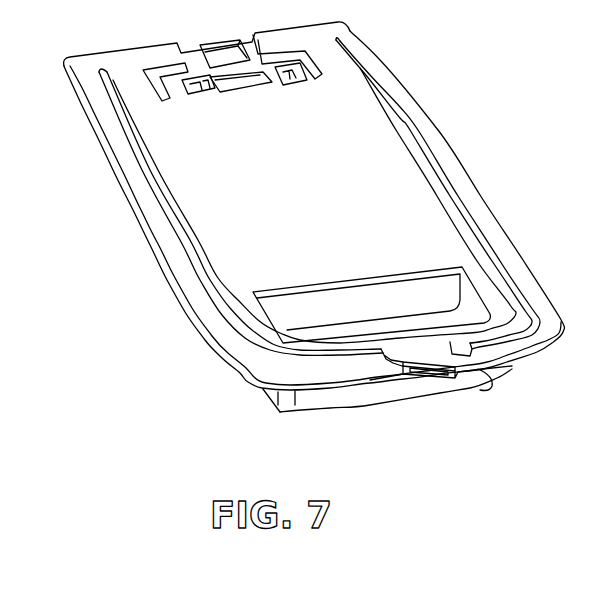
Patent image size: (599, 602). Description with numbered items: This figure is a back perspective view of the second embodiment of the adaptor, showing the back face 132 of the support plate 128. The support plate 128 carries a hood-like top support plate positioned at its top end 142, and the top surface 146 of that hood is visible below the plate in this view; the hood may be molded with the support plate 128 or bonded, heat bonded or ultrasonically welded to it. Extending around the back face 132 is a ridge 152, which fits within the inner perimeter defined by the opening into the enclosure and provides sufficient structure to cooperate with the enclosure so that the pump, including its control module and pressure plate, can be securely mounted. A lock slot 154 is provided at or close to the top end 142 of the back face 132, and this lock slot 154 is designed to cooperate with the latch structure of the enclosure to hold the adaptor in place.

The support plate 128 is at (132, 210).
The back face 132 is at (305, 171).
The ridge 152 is at (392, 80).
The top surface 146 is at (328, 401).
The lock slot 154 is at (407, 371).
The top end 142 is at (488, 372).